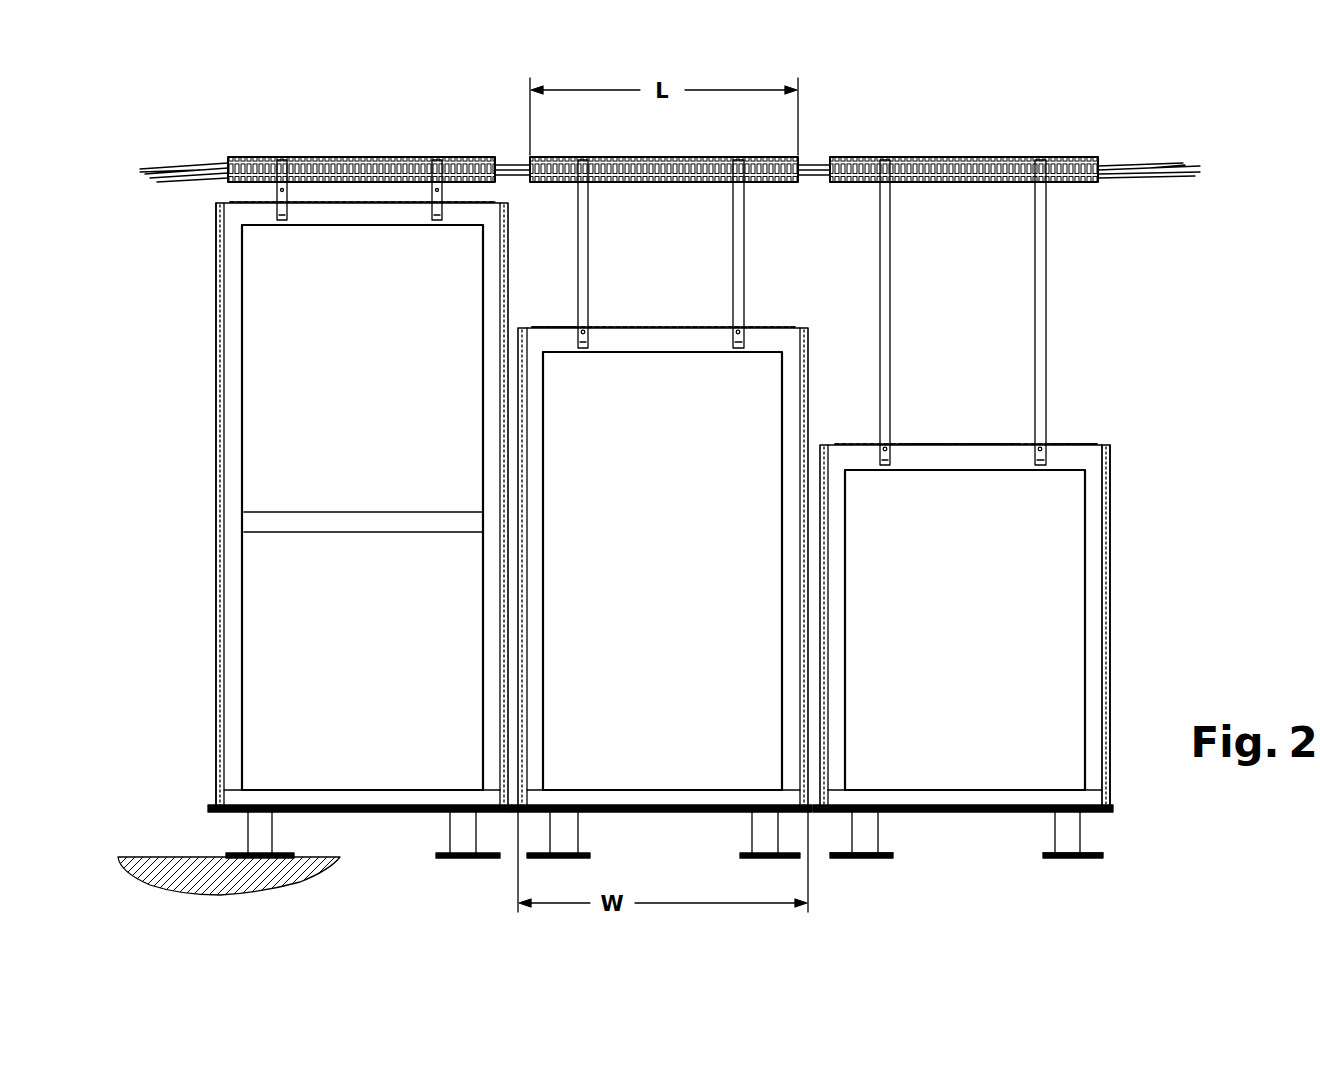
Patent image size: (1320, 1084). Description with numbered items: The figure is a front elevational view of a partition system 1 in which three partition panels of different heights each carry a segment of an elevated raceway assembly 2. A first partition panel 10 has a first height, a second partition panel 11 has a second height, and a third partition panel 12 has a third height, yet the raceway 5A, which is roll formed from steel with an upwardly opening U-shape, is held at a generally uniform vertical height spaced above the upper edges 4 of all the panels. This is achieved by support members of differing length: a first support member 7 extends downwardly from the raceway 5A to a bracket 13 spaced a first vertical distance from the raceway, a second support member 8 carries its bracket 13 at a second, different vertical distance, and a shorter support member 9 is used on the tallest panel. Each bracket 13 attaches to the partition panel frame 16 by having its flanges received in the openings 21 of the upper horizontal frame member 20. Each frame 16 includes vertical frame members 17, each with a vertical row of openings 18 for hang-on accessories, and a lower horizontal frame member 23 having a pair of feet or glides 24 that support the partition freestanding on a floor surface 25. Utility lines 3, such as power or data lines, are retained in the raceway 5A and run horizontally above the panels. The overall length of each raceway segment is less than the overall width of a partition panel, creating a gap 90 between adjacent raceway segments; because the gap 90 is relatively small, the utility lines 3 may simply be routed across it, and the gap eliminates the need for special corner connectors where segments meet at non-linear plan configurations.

The partition system 1 is at (1182, 518).
The elevated raceway assembly 2 is at (1068, 154).
The utility lines 3 is at (180, 160).
The upper edge 4 is at (262, 192).
The raceway 5A is at (395, 157).
The first support member 7 is at (890, 262).
The second support member 8 is at (588, 232).
The support member 9 is at (287, 188).
The first partition panel 10 is at (1013, 814).
The second partition panel 11 is at (703, 814).
The third partition panel 12 is at (397, 814).
The bracket 13 is at (590, 330).
The partition panel frame 16 is at (1116, 497).
The vertical frame members 17 is at (483, 475).
The openings 18 is at (216, 588).
The upper horizontal frame member 20 is at (568, 328).
The openings 21 is at (968, 444).
The lower horizontal frame member 23 is at (345, 806).
The glides 24 is at (873, 860).
The floor surface 25 is at (180, 856).
The gap 90 is at (508, 157).